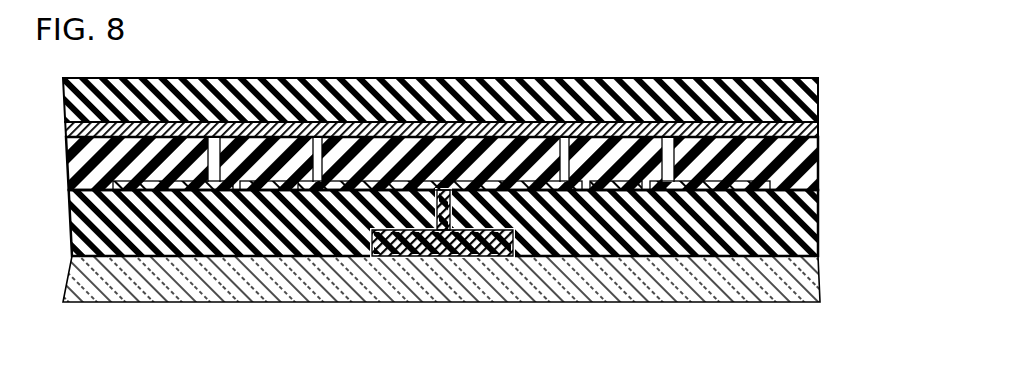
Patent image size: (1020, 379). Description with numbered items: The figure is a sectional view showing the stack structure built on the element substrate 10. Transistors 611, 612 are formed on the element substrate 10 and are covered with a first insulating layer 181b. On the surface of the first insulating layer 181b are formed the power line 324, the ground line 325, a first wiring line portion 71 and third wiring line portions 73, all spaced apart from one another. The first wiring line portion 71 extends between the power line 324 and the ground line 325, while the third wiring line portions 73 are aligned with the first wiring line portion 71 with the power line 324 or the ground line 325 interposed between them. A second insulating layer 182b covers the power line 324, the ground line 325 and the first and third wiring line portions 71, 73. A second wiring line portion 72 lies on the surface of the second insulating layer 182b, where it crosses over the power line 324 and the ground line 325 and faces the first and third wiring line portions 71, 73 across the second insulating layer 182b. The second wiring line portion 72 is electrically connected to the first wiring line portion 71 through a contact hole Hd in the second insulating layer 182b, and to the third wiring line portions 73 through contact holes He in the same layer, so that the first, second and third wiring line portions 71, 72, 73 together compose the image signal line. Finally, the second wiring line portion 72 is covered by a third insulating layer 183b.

The element substrate 10 is at (808, 268).
The first wiring line portion 71 is at (340, 192).
The second wiring line portion 72 is at (808, 130).
The third wiring line portion 73 is at (175, 192).
The first insulating layer 181b is at (808, 222).
The second insulating layer 182b is at (808, 172).
The third insulating layer 183b is at (808, 94).
The power line 324 is at (265, 192).
The ground line 325 is at (630, 192).
The transistor 611 is at (512, 232).
The transistor 612 is at (512, 232).
The contact hole He is at (214, 176).
The contact hole Hd is at (318, 176).